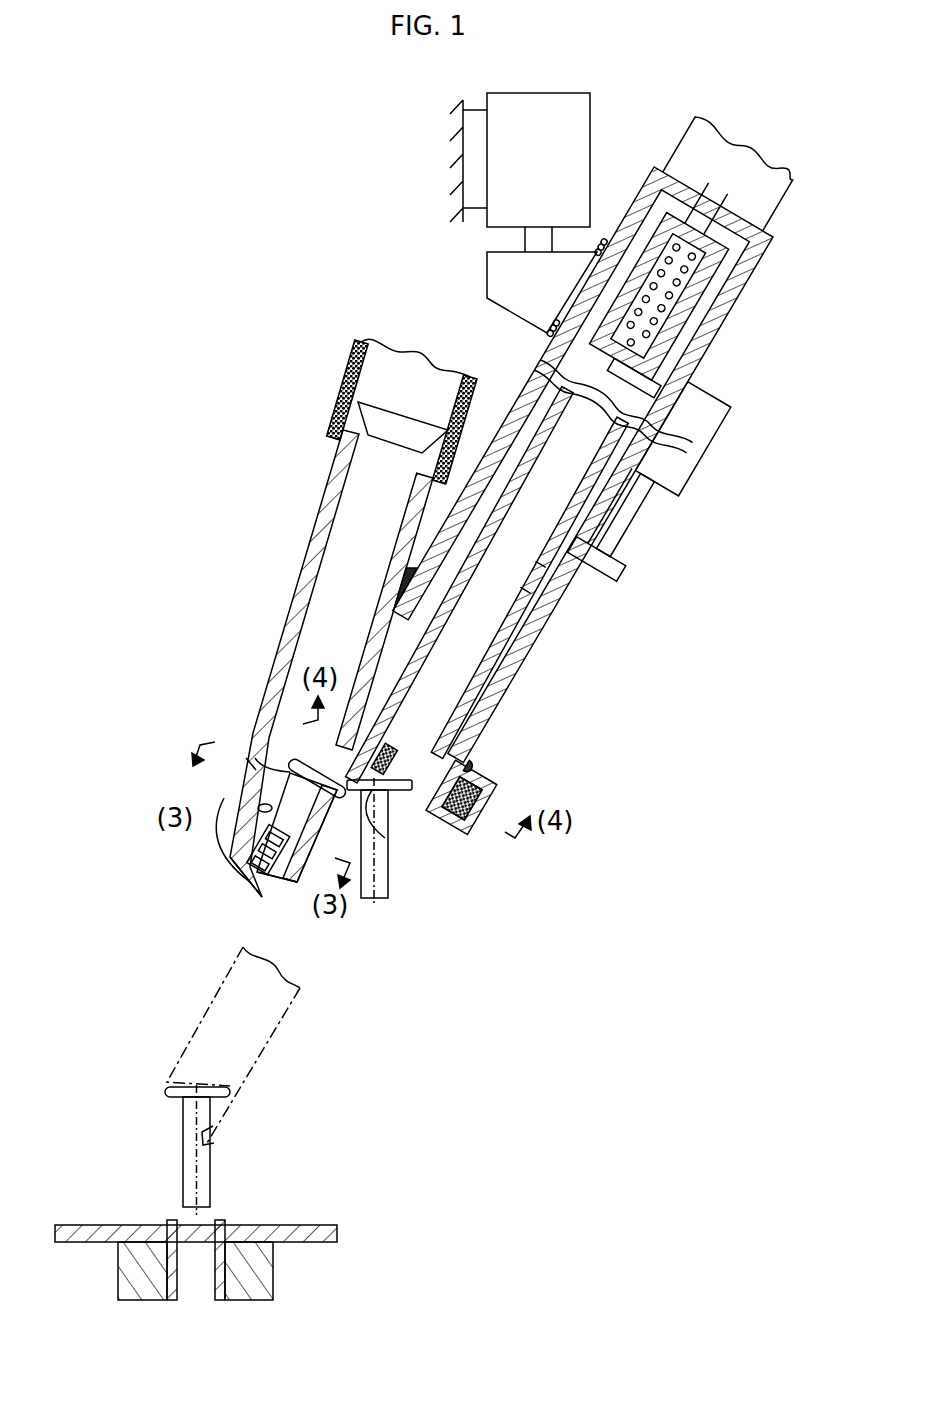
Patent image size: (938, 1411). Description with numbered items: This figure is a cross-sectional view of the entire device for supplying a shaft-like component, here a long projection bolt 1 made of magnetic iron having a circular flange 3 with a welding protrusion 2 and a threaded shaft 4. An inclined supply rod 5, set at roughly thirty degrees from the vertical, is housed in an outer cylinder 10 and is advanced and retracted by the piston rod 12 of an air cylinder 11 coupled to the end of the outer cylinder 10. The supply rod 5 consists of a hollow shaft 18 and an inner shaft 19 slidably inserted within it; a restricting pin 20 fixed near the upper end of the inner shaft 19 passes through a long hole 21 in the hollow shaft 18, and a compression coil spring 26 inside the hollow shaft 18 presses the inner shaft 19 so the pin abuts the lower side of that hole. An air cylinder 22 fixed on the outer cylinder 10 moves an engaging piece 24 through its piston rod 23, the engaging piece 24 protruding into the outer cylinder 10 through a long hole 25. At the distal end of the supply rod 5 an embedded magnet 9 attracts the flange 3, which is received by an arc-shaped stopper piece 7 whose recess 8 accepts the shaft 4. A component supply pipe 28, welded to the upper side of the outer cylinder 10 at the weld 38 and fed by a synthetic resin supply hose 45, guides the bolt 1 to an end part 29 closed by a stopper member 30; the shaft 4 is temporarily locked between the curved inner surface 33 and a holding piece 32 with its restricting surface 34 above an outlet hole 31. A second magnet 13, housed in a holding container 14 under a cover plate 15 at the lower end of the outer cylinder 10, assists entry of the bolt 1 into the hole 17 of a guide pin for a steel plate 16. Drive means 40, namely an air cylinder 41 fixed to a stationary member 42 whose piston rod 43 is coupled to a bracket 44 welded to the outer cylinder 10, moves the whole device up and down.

The projection bolt 1 is at (280, 885).
The welding protrusion 2 is at (288, 772).
The circular flange 3 is at (250, 762).
The shaft 4 is at (250, 870).
The supply rod 5 is at (515, 655).
The stopper piece 7 is at (408, 818).
The recess 8 is at (386, 850).
The magnet 9 is at (396, 742).
The outer cylinder 10 is at (500, 706).
The air cylinder 11 is at (778, 200).
The piston rod 12 is at (705, 206).
The magnet 13 is at (465, 832).
The holding container 14 is at (496, 805).
The cover plate 15 is at (475, 767).
The steel plate 16 is at (290, 1226).
The hole 17 is at (210, 1232).
The hollow shaft 18 is at (512, 607).
The inner shaft 19 is at (540, 563).
The restricting pin 20 is at (652, 380).
The long hole 21 is at (678, 322).
The air cylinder 22 is at (725, 440).
The piston rod 23 is at (630, 514).
The engaging piece 24 is at (625, 575).
The long hole 25 is at (598, 524).
The compression coil spring 26 is at (705, 268).
The component supply pipe 28 is at (308, 548).
The end part 29 is at (226, 848).
The stopper member 30 is at (252, 895).
The outlet hole 31 is at (332, 770).
The holding piece 32 is at (299, 884).
The inner surface 33 is at (258, 809).
The restricting surface 34 is at (312, 806).
The weld 38 is at (405, 575).
The drive means 40 is at (612, 122).
The air cylinder 41 is at (524, 138).
The stationary member 42 is at (466, 162).
The piston rod 43 is at (530, 242).
The bracket 44 is at (487, 276).
The supply hose 45 is at (336, 385).